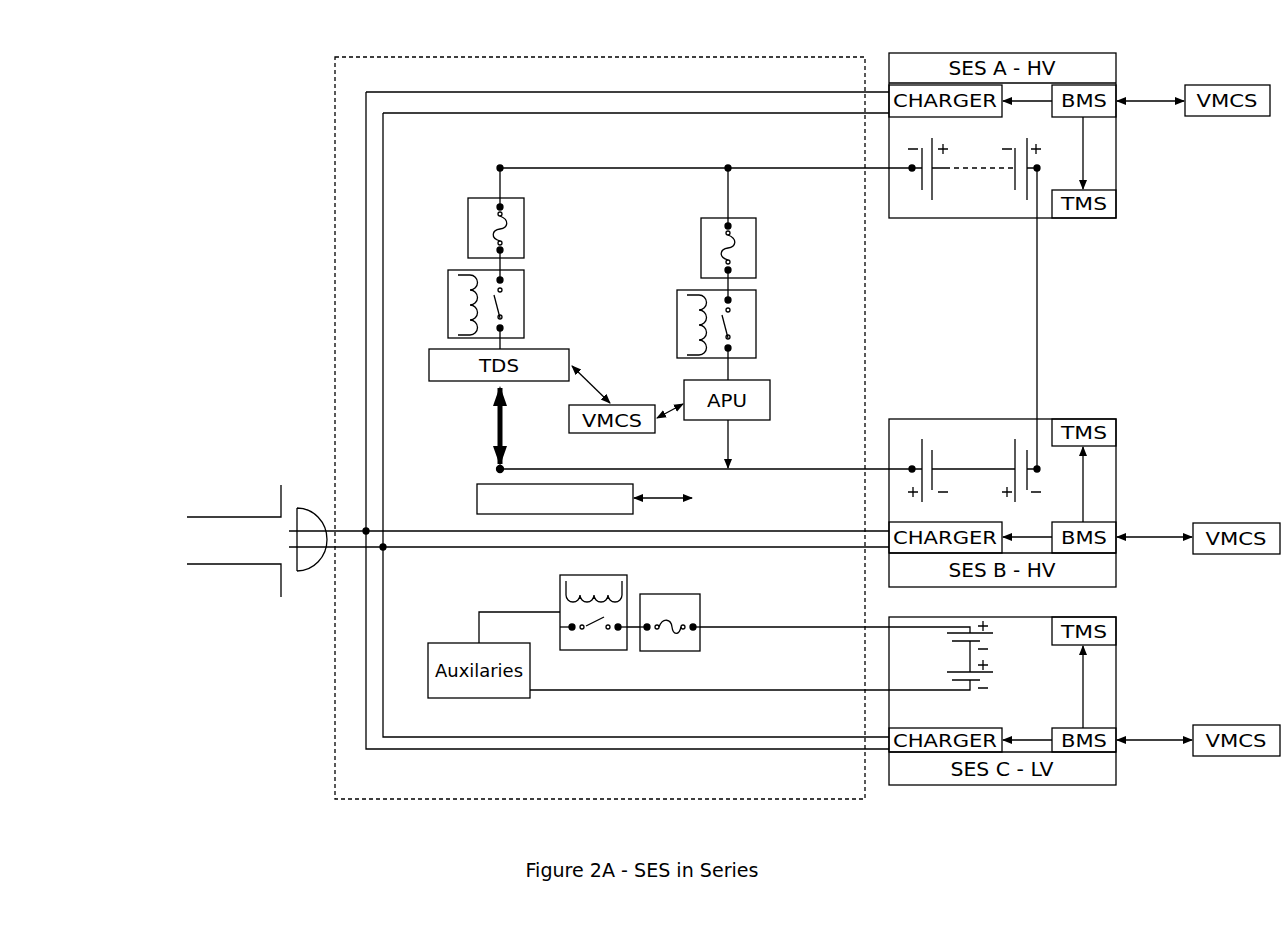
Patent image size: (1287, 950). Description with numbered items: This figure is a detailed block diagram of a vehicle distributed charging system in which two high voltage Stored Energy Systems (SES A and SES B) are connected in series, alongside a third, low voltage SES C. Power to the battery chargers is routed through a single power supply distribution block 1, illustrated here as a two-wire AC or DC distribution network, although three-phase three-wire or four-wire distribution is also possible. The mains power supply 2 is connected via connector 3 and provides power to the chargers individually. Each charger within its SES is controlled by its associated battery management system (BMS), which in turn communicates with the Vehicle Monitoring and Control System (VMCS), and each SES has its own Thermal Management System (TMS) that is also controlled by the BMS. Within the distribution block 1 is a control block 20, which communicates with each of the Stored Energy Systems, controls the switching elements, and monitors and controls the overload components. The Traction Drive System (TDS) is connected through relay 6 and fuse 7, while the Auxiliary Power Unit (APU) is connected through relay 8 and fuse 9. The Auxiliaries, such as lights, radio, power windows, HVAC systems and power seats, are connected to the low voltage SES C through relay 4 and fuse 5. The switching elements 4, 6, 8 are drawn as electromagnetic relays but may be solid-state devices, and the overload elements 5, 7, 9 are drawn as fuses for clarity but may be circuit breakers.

The power supply distribution block 1 is at (768, 57).
The mains power supply 2 is at (226, 515).
The connector 3 is at (323, 563).
The switching element 4 is at (608, 651).
The overload element 5 is at (703, 644).
The switching element 6 is at (524, 305).
The overload element 7 is at (524, 230).
The switching element 8 is at (756, 325).
The overload element 9 is at (756, 247).
The control block 20 is at (473, 501).